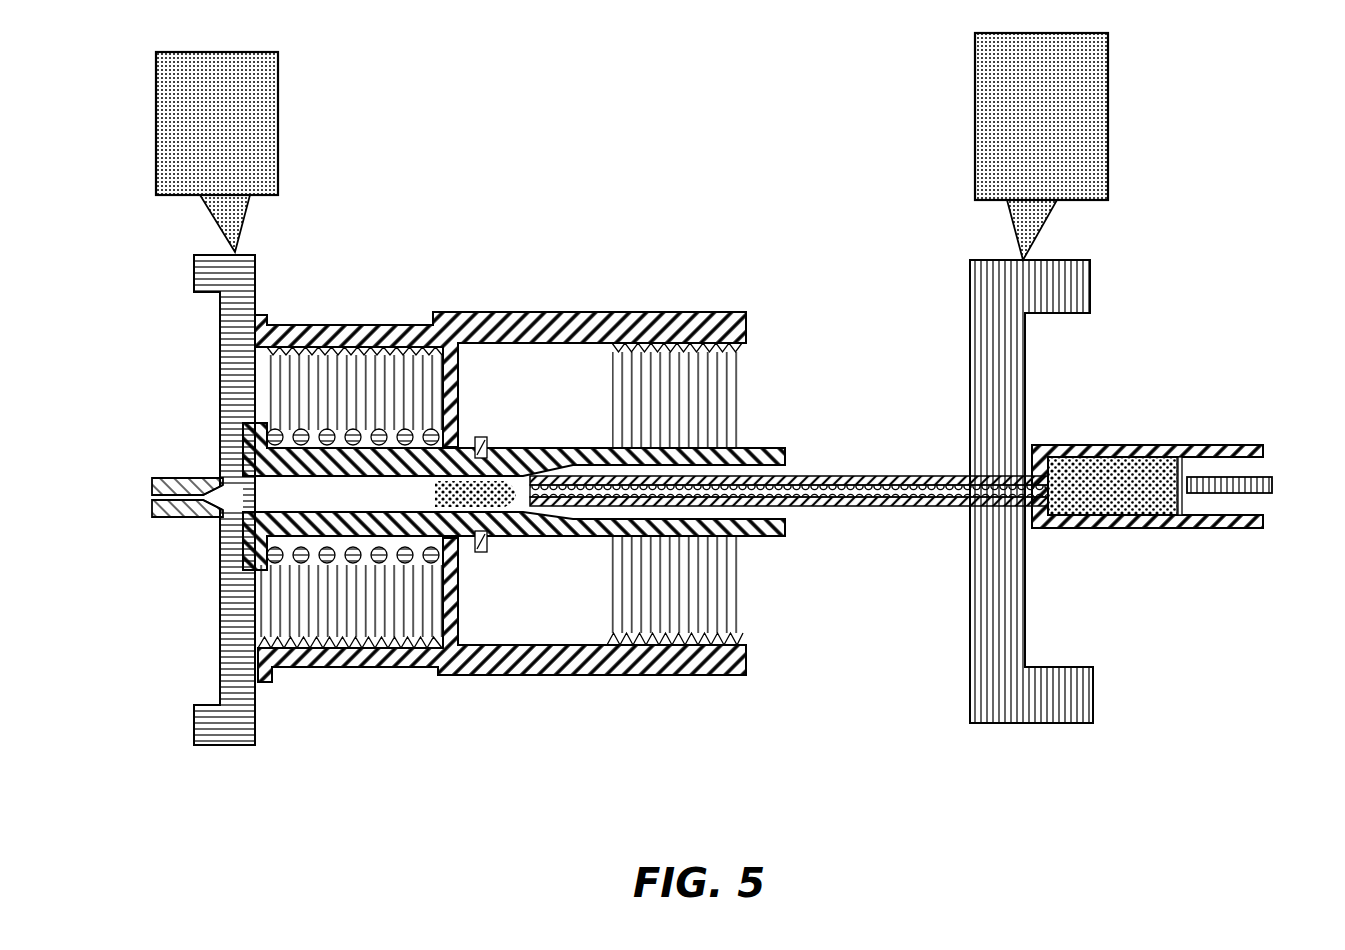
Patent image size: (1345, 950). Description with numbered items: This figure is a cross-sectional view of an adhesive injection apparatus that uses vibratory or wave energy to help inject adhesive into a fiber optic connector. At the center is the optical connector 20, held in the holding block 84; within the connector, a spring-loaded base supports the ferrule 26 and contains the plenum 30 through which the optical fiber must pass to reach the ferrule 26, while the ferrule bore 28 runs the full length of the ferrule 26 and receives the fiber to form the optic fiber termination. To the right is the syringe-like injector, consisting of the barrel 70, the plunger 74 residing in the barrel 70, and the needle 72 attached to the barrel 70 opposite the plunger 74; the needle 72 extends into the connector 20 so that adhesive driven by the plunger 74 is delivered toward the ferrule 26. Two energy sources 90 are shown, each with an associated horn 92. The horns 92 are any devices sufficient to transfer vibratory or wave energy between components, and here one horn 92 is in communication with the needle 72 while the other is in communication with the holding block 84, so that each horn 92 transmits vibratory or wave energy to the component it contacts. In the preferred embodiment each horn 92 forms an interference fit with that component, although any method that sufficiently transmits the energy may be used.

The optical connector 20 is at (512, 312).
The ferrule 26 is at (167, 518).
The ferrule bore 28 is at (152, 497).
The plenum 30 is at (600, 537).
The barrel 70 is at (1178, 530).
The needle 72 is at (847, 475).
The plunger 74 is at (1275, 490).
The holding block 84 is at (258, 710).
The energy source 90 is at (278, 72).
The horn 92 is at (248, 210).